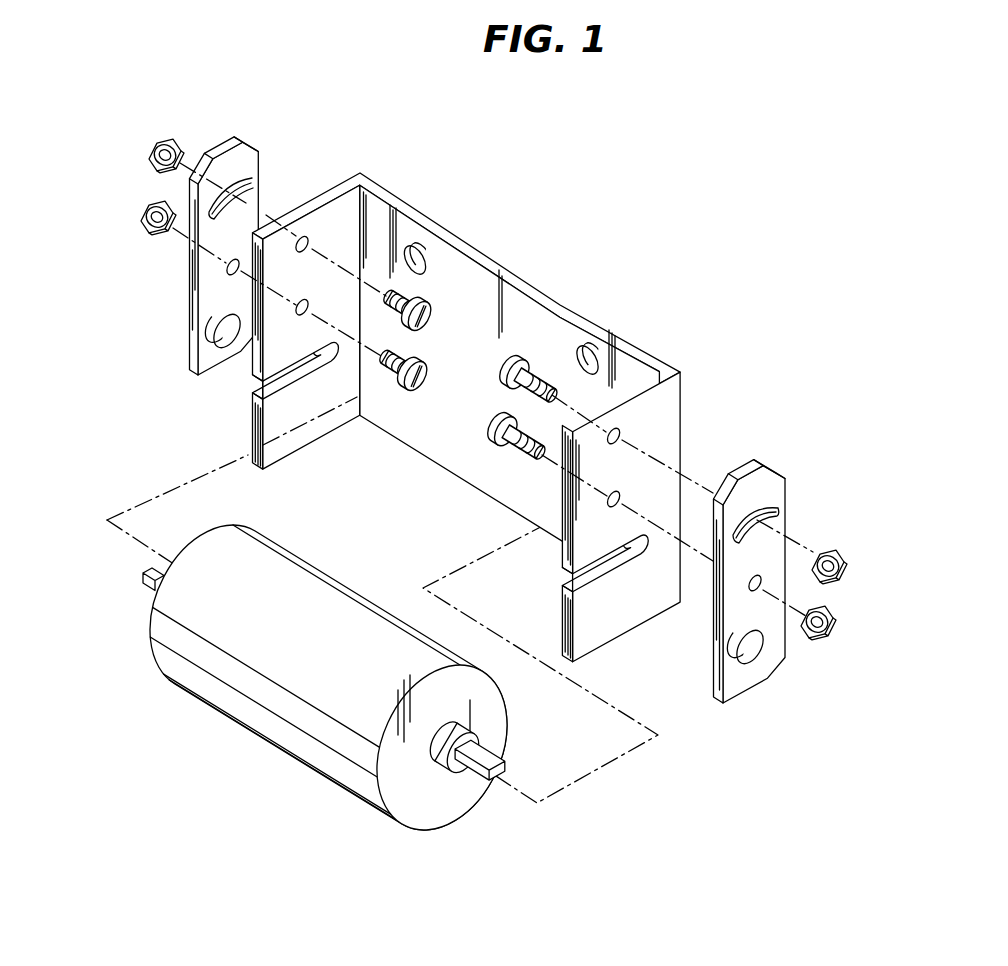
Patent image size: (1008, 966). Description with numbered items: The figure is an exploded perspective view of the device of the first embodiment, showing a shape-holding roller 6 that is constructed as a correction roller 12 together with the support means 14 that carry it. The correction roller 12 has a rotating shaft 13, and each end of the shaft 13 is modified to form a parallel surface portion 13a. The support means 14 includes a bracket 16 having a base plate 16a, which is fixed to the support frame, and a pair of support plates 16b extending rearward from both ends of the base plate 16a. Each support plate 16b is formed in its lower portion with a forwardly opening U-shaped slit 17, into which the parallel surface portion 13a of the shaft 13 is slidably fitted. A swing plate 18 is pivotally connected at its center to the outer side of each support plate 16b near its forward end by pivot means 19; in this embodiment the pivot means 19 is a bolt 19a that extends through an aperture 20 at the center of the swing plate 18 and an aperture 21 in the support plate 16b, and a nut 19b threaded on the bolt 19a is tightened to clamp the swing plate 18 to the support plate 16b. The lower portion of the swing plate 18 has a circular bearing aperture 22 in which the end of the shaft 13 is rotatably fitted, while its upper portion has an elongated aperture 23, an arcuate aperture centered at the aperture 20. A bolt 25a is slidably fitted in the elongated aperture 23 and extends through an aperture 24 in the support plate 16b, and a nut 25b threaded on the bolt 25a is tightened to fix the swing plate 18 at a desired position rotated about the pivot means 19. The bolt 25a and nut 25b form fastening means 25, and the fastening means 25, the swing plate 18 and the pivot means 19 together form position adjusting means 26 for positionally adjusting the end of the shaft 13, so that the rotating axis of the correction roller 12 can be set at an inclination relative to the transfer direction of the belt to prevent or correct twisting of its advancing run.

The shape-holding roller 6 is at (296, 704).
The correction roller 12 is at (341, 688).
The rotating shaft 13 is at (406, 815).
The parallel surface portion 13a is at (145, 580).
The support means 14 is at (457, 375).
The bracket 16 is at (457, 375).
The base plate 16a is at (458, 237).
The support plate 16b is at (457, 375).
The U-shaped slit 17 is at (250, 400).
The swing plate 18 is at (475, 425).
The pivot means 19 is at (459, 436).
The bolt 19a is at (500, 442).
The nut 19b is at (147, 206).
The aperture 20 is at (226, 270).
The aperture 21 is at (311, 307).
The circular bearing aperture 22 is at (219, 345).
The elongated aperture 23 is at (250, 166).
The aperture 24 is at (305, 237).
The fastening means 25 is at (509, 335).
The bolt 25a is at (578, 296).
The nut 25b is at (170, 138).
The position adjusting means 26 is at (490, 396).